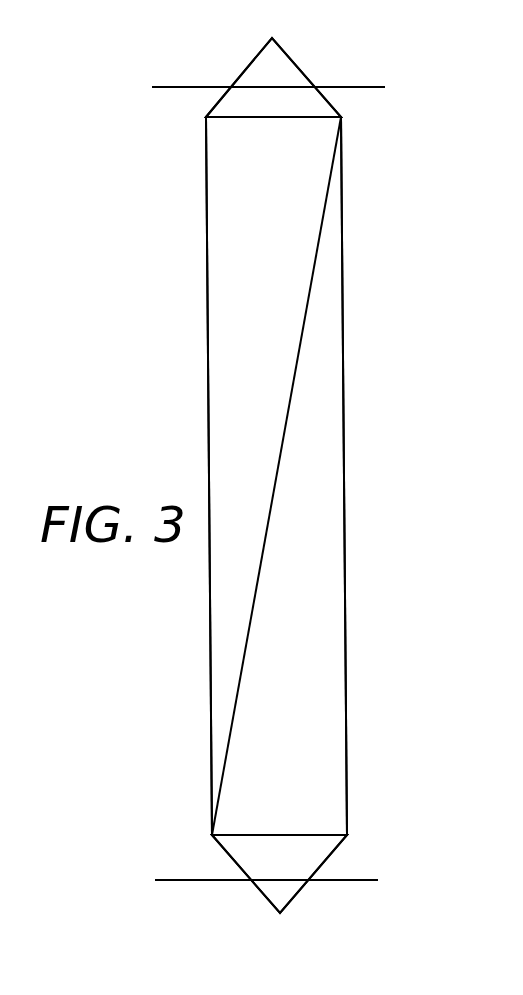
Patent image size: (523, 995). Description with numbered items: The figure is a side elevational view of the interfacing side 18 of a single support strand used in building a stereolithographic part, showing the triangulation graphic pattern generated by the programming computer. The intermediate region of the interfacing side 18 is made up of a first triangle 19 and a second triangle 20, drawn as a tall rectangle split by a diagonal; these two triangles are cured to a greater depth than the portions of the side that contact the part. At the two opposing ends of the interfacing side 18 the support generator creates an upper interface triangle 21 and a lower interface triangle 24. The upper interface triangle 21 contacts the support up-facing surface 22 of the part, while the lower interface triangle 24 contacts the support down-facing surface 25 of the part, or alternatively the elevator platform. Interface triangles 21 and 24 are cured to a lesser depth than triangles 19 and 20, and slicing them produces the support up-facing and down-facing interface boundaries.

The interfacing side 18 is at (388, 309).
The first triangle 19 is at (333, 478).
The second triangle 20 is at (220, 427).
The upper interface triangle 21 is at (295, 98).
The support up-facing surface 22 is at (185, 87).
The lower interface triangle 24 is at (312, 849).
The support down-facing surface 25 is at (202, 883).